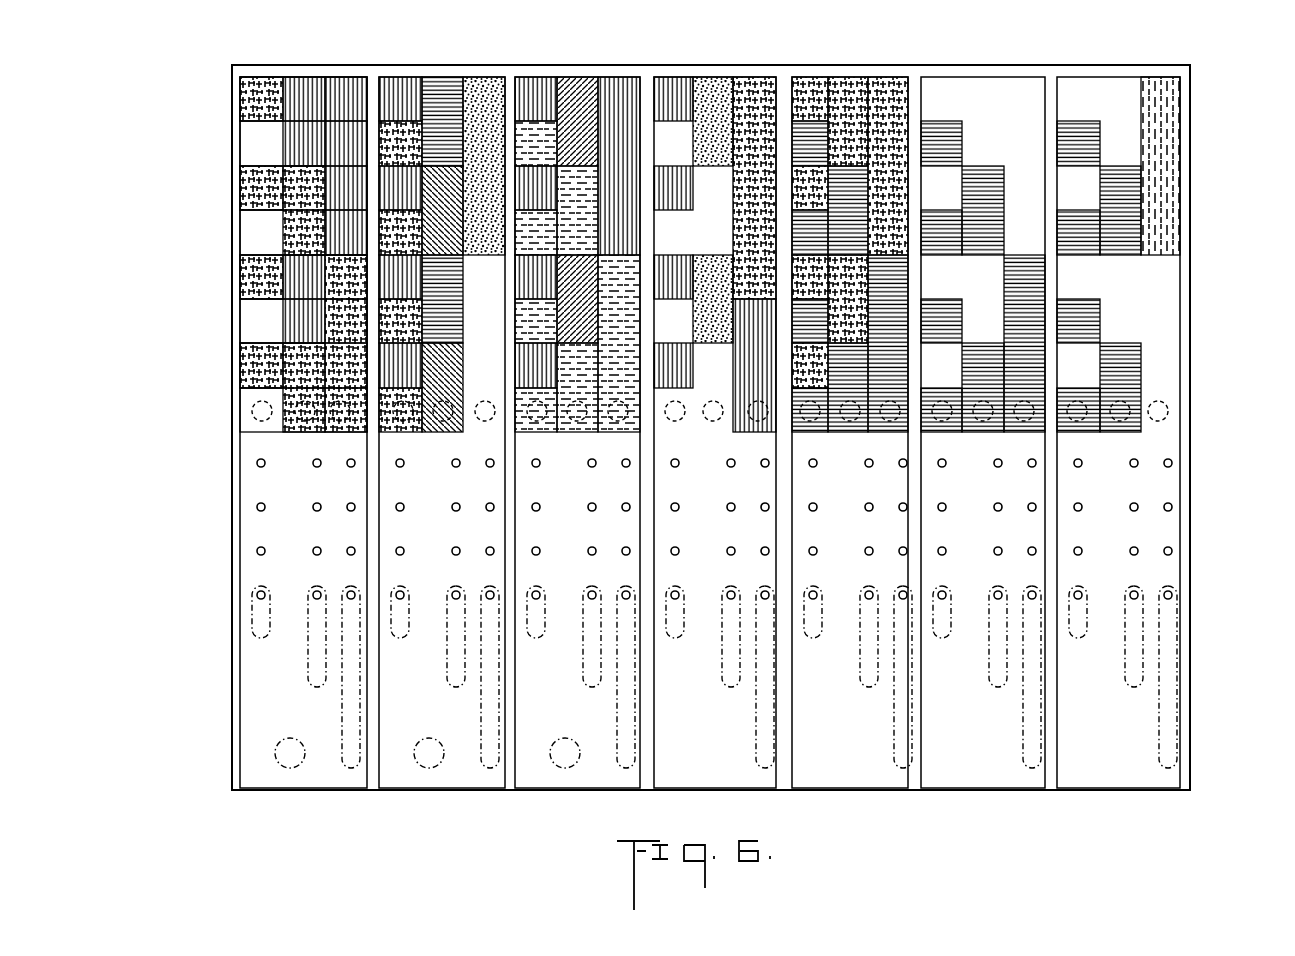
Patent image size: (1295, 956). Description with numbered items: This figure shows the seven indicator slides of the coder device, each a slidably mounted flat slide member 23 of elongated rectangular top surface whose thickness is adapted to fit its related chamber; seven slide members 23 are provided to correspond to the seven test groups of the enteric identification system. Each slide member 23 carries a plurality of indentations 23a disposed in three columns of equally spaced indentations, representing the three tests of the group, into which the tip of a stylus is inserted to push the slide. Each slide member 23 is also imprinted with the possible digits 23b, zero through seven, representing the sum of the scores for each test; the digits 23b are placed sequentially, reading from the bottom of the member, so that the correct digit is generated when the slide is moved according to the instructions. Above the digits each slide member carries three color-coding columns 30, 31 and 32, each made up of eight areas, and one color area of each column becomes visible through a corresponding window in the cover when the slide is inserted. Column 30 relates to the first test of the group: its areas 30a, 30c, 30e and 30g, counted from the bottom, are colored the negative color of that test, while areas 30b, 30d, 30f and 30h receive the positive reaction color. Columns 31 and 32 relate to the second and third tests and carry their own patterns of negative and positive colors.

The slide member 23 is at (276, 795).
The indentations 23a is at (258, 510).
The digits 23b is at (276, 455).
The color column 30 is at (260, 64).
The color column 31 is at (310, 64).
The color column 32 is at (348, 64).
The color area 30a is at (248, 400).
The color area 30b is at (248, 372).
The color area 30c is at (248, 322).
The color area 30d is at (248, 272).
The color area 30e is at (248, 228).
The color area 30f is at (248, 183).
The color area 30g is at (248, 134).
The color area 30h is at (248, 100).